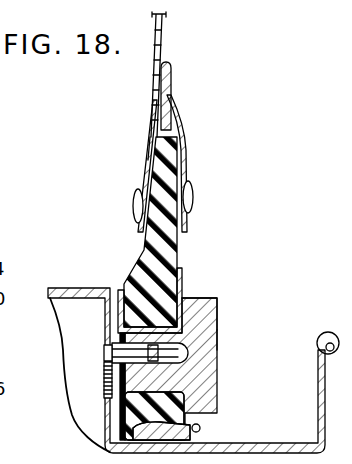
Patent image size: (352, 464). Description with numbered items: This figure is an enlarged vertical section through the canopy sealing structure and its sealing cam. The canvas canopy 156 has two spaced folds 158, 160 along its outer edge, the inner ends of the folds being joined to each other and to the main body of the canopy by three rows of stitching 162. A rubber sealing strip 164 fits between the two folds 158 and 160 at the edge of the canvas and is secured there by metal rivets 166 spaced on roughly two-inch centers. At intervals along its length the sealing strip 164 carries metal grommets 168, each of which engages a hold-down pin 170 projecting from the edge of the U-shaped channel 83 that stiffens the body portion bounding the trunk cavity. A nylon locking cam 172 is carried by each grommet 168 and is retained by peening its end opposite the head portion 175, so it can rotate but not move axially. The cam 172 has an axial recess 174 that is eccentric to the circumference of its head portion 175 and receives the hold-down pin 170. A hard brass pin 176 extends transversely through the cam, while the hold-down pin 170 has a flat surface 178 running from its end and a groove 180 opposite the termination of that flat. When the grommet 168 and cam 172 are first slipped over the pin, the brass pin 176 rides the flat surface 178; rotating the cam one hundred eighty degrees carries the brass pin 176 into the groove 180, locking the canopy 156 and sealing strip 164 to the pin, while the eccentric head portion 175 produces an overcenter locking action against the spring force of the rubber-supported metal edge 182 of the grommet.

The U-shaped channel 83 is at (322, 398).
The canvas canopy 156 is at (163, 34).
The fold 158 is at (150, 136).
The fold 160 is at (172, 129).
The stitching 162 is at (172, 97).
The rubber sealing strip 164 is at (145, 262).
The metal rivets 166 is at (190, 203).
The metal grommet 168 is at (181, 273).
The hold-down pin 170 is at (110, 360).
The locking cam 172 is at (221, 375).
The axial recess 174 is at (218, 350).
The head portion 175 is at (217, 343).
The hard brass pin 176 is at (215, 335).
The flat surface 178 is at (115, 344).
The groove 180 is at (106, 386).
The metal edge 182 is at (200, 428).